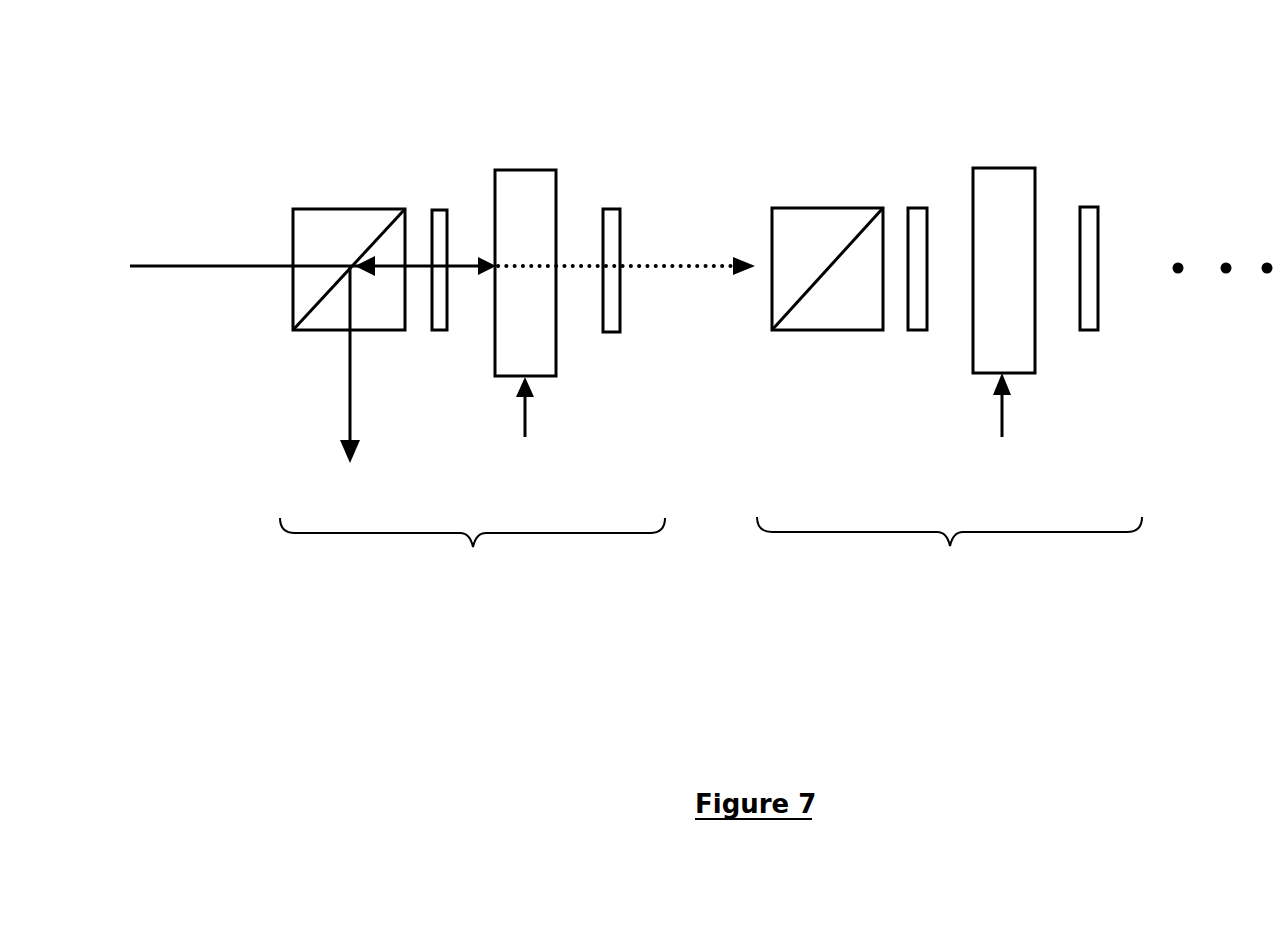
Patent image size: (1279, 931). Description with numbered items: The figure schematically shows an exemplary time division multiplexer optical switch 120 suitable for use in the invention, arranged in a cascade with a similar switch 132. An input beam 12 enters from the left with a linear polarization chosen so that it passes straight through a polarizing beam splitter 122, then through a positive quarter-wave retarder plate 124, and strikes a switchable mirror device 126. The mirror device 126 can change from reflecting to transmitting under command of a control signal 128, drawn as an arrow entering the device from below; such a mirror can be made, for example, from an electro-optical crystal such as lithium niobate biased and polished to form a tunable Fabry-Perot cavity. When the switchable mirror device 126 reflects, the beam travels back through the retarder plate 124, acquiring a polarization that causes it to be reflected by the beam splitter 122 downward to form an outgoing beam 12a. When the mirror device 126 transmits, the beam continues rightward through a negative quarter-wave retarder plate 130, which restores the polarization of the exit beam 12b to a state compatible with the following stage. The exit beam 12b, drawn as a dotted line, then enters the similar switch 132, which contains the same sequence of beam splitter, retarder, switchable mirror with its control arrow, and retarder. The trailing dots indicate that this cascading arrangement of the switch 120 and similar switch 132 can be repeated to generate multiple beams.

The input beam 12 is at (250, 266).
The outgoing beam 12a is at (347, 395).
The exit beam 12b is at (703, 265).
The time division multiplexer optical switch 120 is at (472, 554).
The polarizing beam splitter 122 is at (368, 208).
The +0.25 wave retarder plate 124 is at (438, 210).
The switchable mirror device 126 is at (530, 170).
The control signal 128 is at (527, 425).
The −0.25 wave retarder plate 130 is at (612, 209).
The similar switch 132 is at (949, 381).